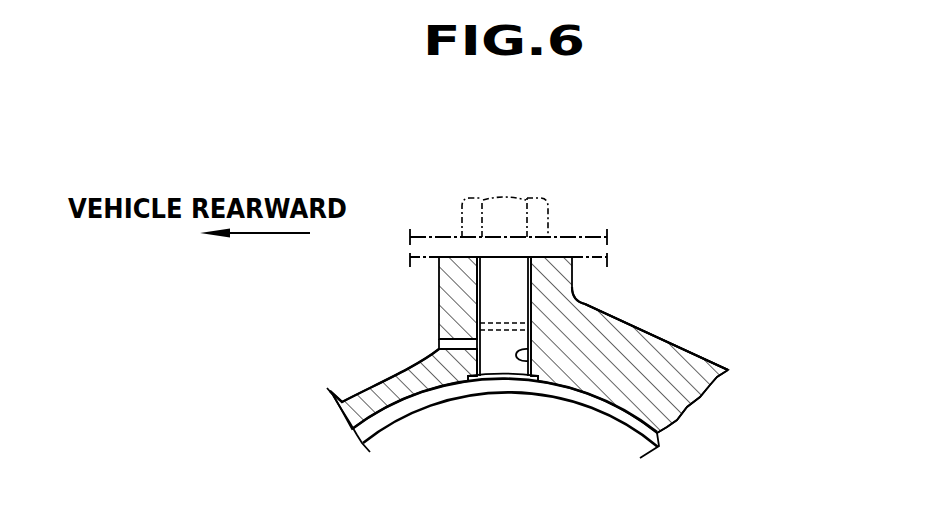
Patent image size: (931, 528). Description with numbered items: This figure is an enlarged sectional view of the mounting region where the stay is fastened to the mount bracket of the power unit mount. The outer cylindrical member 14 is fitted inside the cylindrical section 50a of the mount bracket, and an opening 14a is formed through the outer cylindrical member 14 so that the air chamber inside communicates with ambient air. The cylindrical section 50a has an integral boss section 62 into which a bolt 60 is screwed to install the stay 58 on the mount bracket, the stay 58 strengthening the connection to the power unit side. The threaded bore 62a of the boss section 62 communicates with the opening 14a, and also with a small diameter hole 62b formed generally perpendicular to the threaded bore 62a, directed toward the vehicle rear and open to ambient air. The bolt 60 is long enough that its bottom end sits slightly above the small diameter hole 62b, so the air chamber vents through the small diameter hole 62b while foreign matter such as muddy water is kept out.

The outer cylindrical member 14 is at (608, 410).
The opening 14a is at (522, 392).
The cylindrical section 50a is at (678, 345).
The stay 58 is at (585, 237).
The bolt 60 is at (537, 205).
The boss section 62 is at (563, 283).
The threaded bore 62a is at (600, 311).
The small diameter hole 62b is at (445, 342).